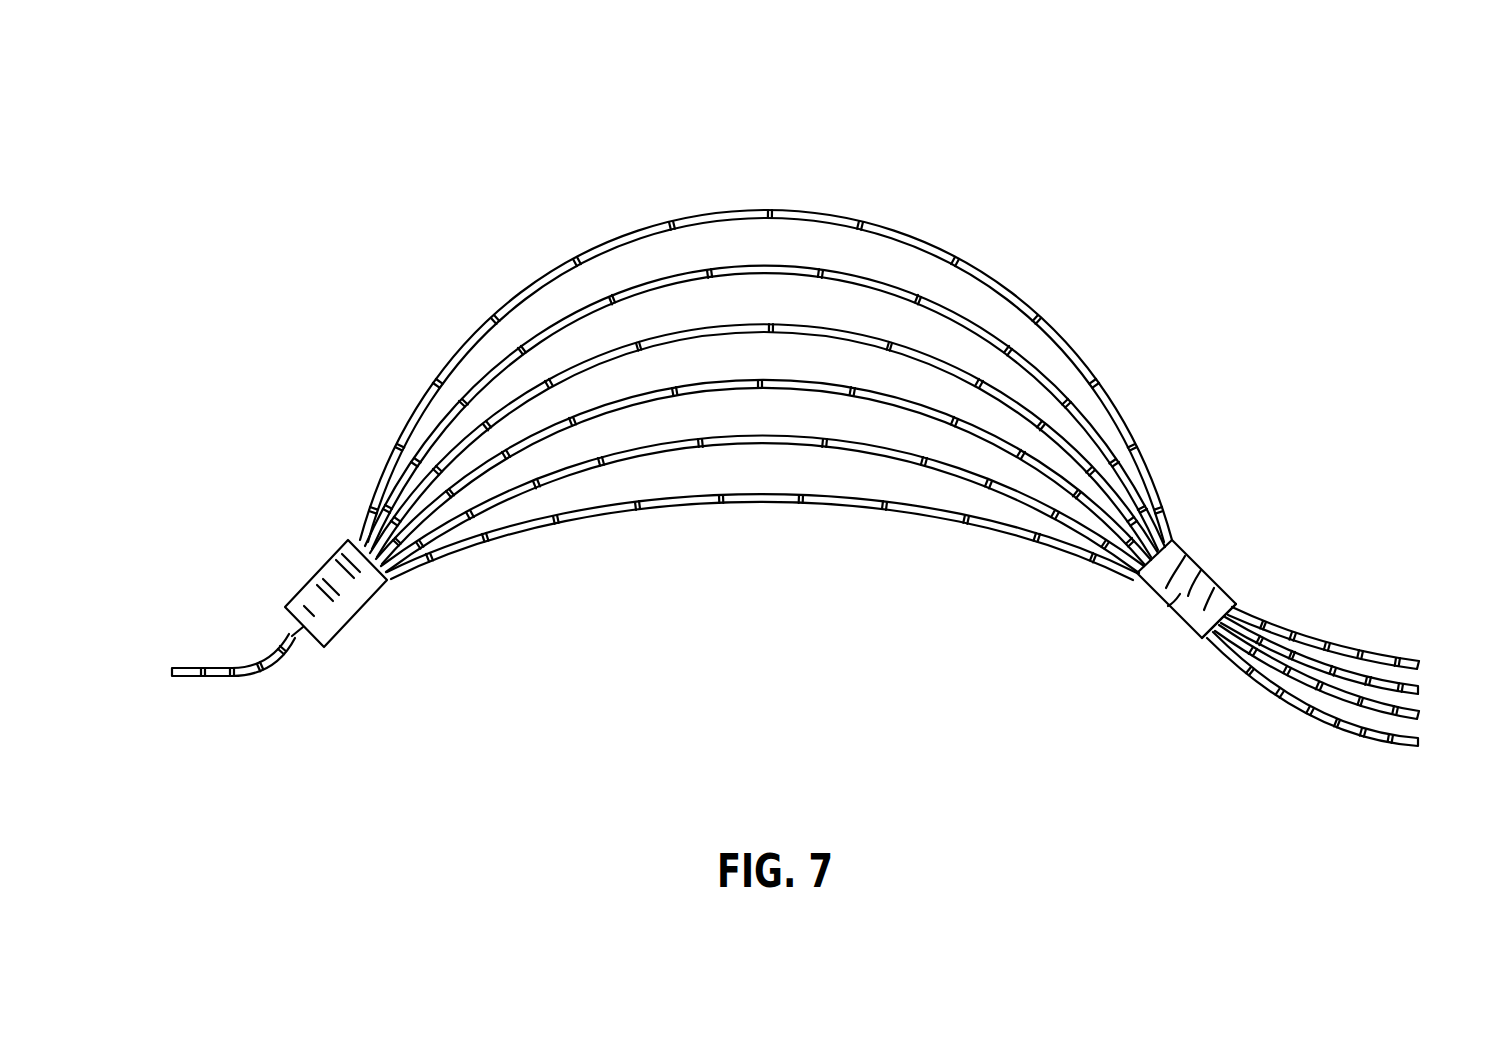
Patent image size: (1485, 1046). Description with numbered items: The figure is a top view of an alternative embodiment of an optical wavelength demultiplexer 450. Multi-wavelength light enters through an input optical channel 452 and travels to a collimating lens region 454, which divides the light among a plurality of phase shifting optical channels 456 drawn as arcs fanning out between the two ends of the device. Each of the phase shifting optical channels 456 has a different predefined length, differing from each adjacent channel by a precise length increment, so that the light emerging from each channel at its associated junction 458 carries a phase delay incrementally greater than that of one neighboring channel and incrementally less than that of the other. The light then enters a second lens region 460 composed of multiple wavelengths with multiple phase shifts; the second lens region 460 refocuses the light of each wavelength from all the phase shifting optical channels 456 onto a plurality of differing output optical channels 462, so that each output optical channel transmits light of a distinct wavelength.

The optical wavelength demultiplexer 450 is at (1184, 232).
The input optical channel 452 is at (246, 660).
The collimating lens region 454 is at (325, 580).
The phase shifting optical channels 456 is at (847, 447).
The junctions 458 is at (1175, 520).
The second lens region 460 is at (1233, 594).
The output optical channels 462 is at (1337, 687).